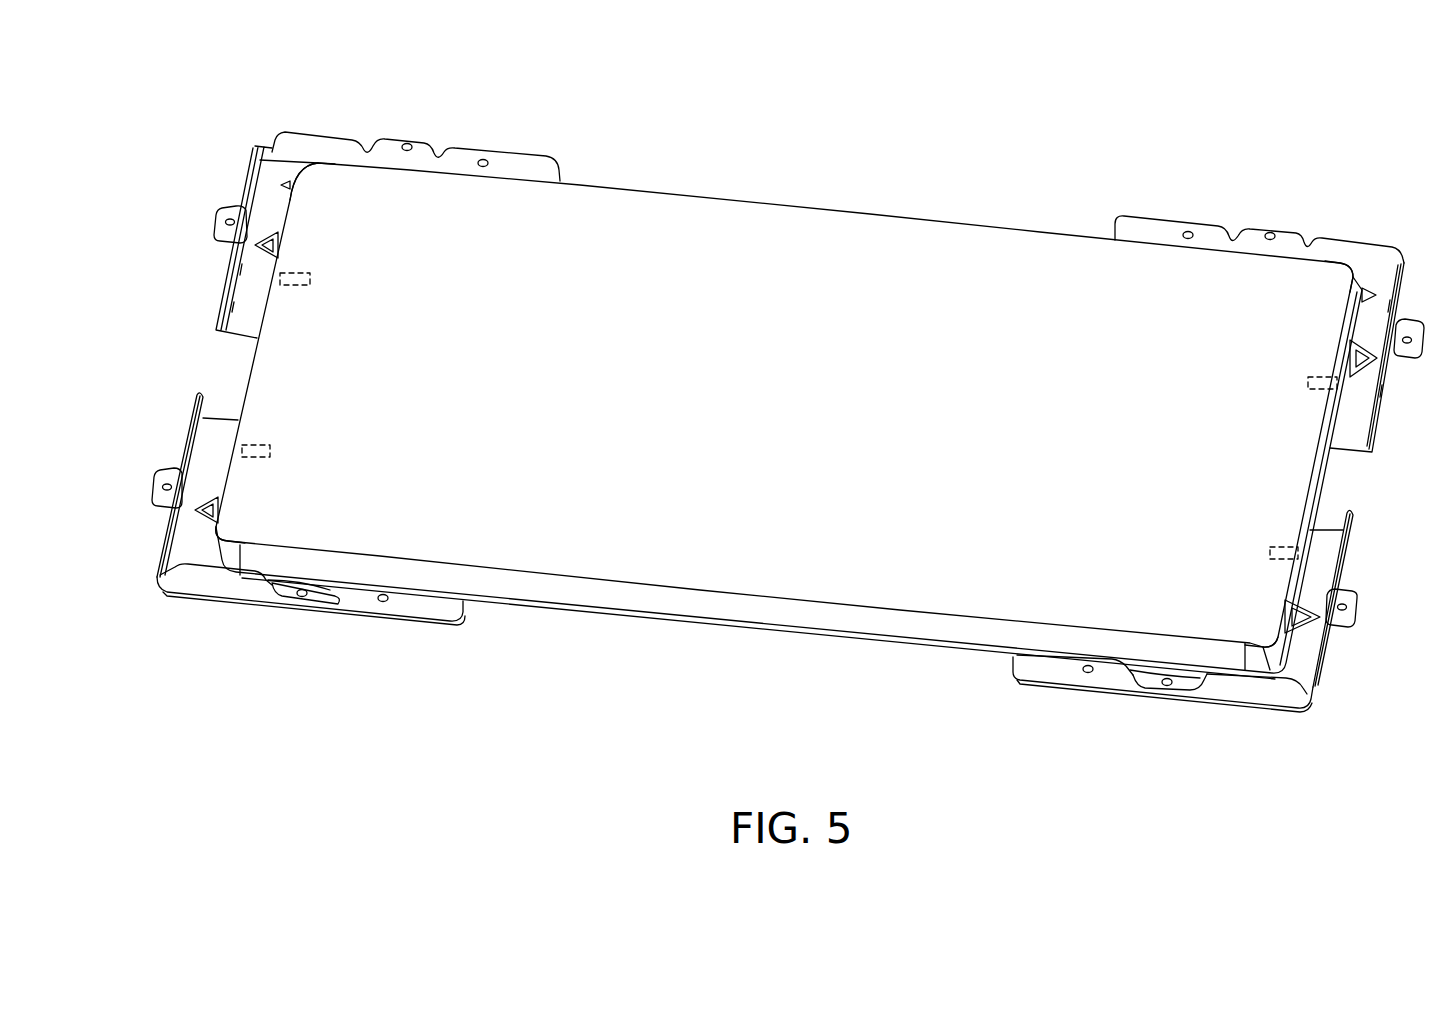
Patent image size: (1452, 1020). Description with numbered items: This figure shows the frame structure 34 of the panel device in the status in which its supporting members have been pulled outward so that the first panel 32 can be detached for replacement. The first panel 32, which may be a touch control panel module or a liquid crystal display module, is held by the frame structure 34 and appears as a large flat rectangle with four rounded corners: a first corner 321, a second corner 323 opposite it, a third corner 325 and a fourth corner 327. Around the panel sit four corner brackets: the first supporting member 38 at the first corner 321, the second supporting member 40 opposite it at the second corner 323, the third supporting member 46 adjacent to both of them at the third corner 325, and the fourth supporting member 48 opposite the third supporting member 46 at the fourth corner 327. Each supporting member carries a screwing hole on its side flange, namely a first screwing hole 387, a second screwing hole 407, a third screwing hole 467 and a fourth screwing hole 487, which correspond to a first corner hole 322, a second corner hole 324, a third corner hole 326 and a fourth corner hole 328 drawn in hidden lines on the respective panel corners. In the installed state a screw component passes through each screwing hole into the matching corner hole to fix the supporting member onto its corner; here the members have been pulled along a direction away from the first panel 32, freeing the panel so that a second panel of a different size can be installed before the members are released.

The first panel 32 is at (820, 203).
The frame structure 34 is at (1070, 138).
The first supporting member 38 is at (1310, 216).
The second supporting member 40 is at (243, 620).
The third supporting member 46 is at (365, 132).
The fourth supporting member 48 is at (1135, 710).
The first corner 321 is at (1343, 278).
The first corner hole 322 is at (1308, 377).
The second corner 323 is at (235, 527).
The second corner hole 324 is at (270, 445).
The third corner 325 is at (313, 175).
The third corner hole 326 is at (312, 278).
The fourth corner 327 is at (1255, 627).
The fourth corner hole 328 is at (1268, 548).
The first screwing hole 387 is at (1383, 385).
The second screwing hole 407 is at (186, 440).
The third screwing hole 467 is at (228, 270).
The fourth screwing hole 487 is at (1355, 560).